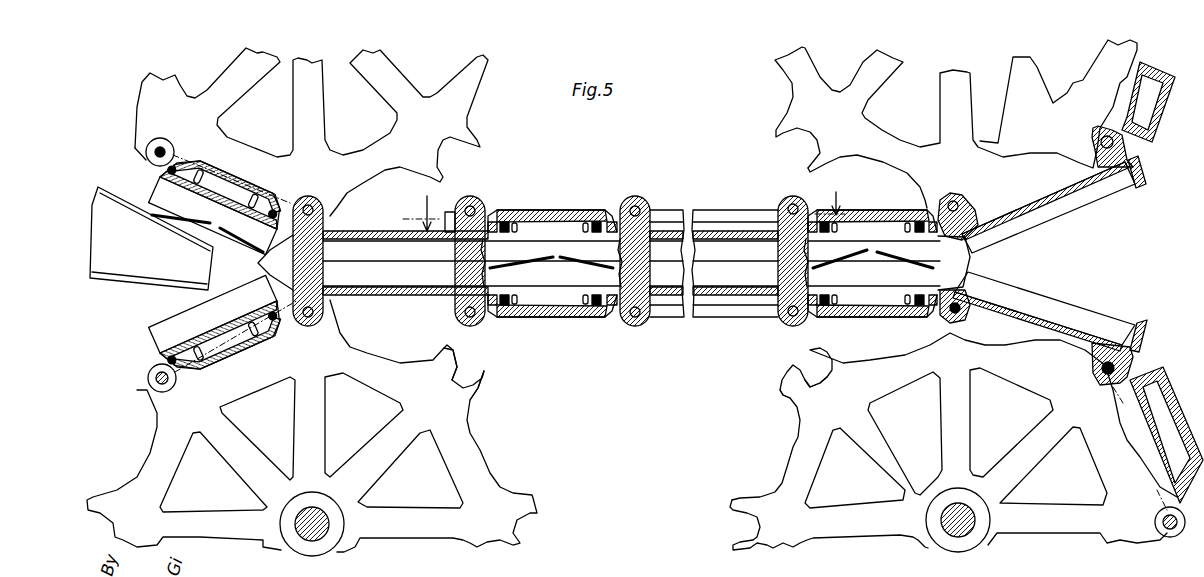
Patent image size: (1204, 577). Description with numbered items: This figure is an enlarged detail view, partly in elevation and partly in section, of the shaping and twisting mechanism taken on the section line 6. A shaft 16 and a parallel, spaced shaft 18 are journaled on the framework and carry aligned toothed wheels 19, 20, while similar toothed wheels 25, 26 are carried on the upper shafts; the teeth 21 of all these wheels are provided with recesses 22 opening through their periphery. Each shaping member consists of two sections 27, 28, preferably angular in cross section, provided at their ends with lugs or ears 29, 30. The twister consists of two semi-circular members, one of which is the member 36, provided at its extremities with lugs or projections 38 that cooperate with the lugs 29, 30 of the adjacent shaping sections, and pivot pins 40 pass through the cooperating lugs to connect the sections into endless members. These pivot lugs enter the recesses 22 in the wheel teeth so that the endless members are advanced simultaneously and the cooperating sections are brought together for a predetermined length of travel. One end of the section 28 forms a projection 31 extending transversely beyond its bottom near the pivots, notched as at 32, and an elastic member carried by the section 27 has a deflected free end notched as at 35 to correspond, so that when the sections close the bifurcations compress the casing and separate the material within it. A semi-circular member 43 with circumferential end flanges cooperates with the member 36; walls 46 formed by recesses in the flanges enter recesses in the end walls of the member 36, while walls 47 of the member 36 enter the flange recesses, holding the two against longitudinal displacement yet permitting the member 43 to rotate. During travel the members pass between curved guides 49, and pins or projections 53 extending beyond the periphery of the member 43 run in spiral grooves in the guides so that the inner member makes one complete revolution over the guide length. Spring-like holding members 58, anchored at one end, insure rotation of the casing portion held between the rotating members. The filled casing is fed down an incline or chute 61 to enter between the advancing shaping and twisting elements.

The section line 6 is at (624, 208).
The shaft 16 is at (965, 525).
The shaft 18 is at (305, 525).
The toothed wheel 19 is at (800, 448).
The toothed wheel 20 is at (470, 452).
The teeth 21 is at (484, 385).
The recesses 22 is at (455, 375).
The toothed wheel 25 is at (792, 74).
The toothed wheel 26 is at (470, 94).
The shaping member section 27 is at (358, 232).
The shaping member section 28 is at (402, 295).
The lugs or ears 29 is at (648, 212).
The lugs or ears 30 is at (955, 320).
The projection 31 is at (972, 285).
The notch 32 is at (990, 230).
The notch 35 is at (1145, 180).
The semi-circular twister member 36 is at (556, 211).
The lugs or projections 38 is at (488, 214).
The pivot pins 40 is at (480, 200).
The semi-circular member 43 is at (570, 234).
The walls 46 is at (746, 255).
The walls 47 is at (678, 257).
The guide 49 is at (450, 212).
The pins or projections 53 is at (518, 224).
The holding members 58 is at (205, 238).
The incline or chute 61 is at (135, 283).